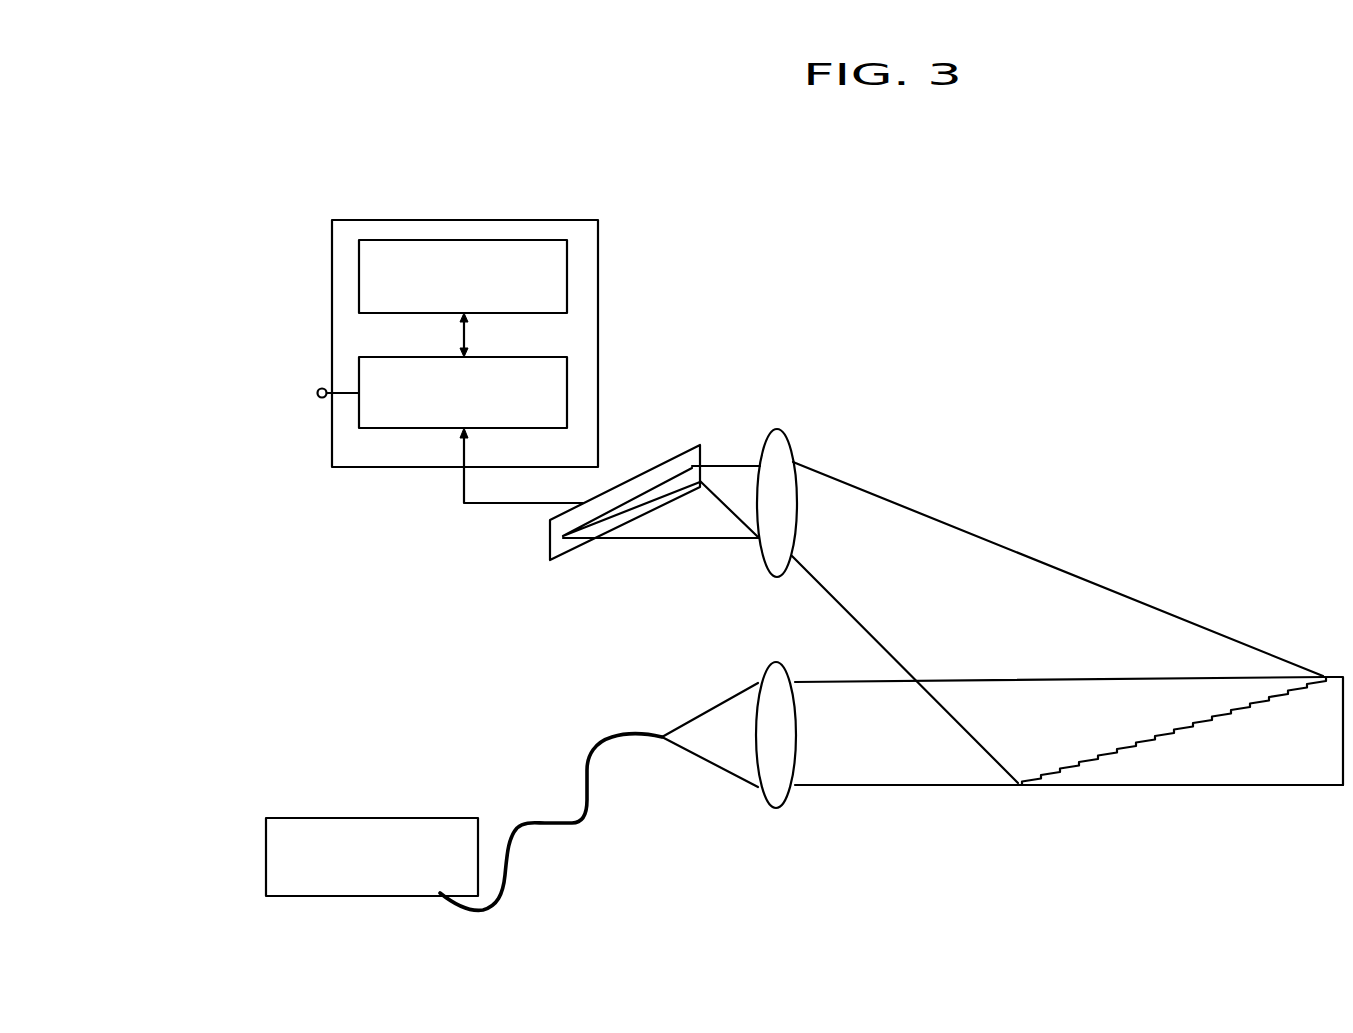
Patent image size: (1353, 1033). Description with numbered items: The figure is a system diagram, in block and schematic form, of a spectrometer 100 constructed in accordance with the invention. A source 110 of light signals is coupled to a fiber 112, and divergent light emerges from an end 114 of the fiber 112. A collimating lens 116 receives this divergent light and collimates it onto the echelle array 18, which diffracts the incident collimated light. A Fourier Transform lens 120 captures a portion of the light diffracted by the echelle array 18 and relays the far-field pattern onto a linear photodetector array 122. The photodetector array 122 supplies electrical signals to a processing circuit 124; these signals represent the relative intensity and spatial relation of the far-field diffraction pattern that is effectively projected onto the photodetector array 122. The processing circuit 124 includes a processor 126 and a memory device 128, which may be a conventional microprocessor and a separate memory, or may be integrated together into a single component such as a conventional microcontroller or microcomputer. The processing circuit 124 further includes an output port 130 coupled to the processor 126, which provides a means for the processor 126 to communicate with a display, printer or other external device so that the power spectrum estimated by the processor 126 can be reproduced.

The spectrometer 100 is at (848, 240).
The processing circuit 124 is at (486, 220).
The memory device 128 is at (568, 270).
The processor 126 is at (568, 369).
The output port 130 is at (318, 390).
The linear photodetector array 122 is at (662, 462).
The Fourier Transform lens 120 is at (787, 435).
The source 110 is at (320, 818).
The fiber 112 is at (552, 827).
The end of fiber 114 is at (658, 733).
The collimating lens 116 is at (777, 810).
The grating 18 is at (1215, 778).